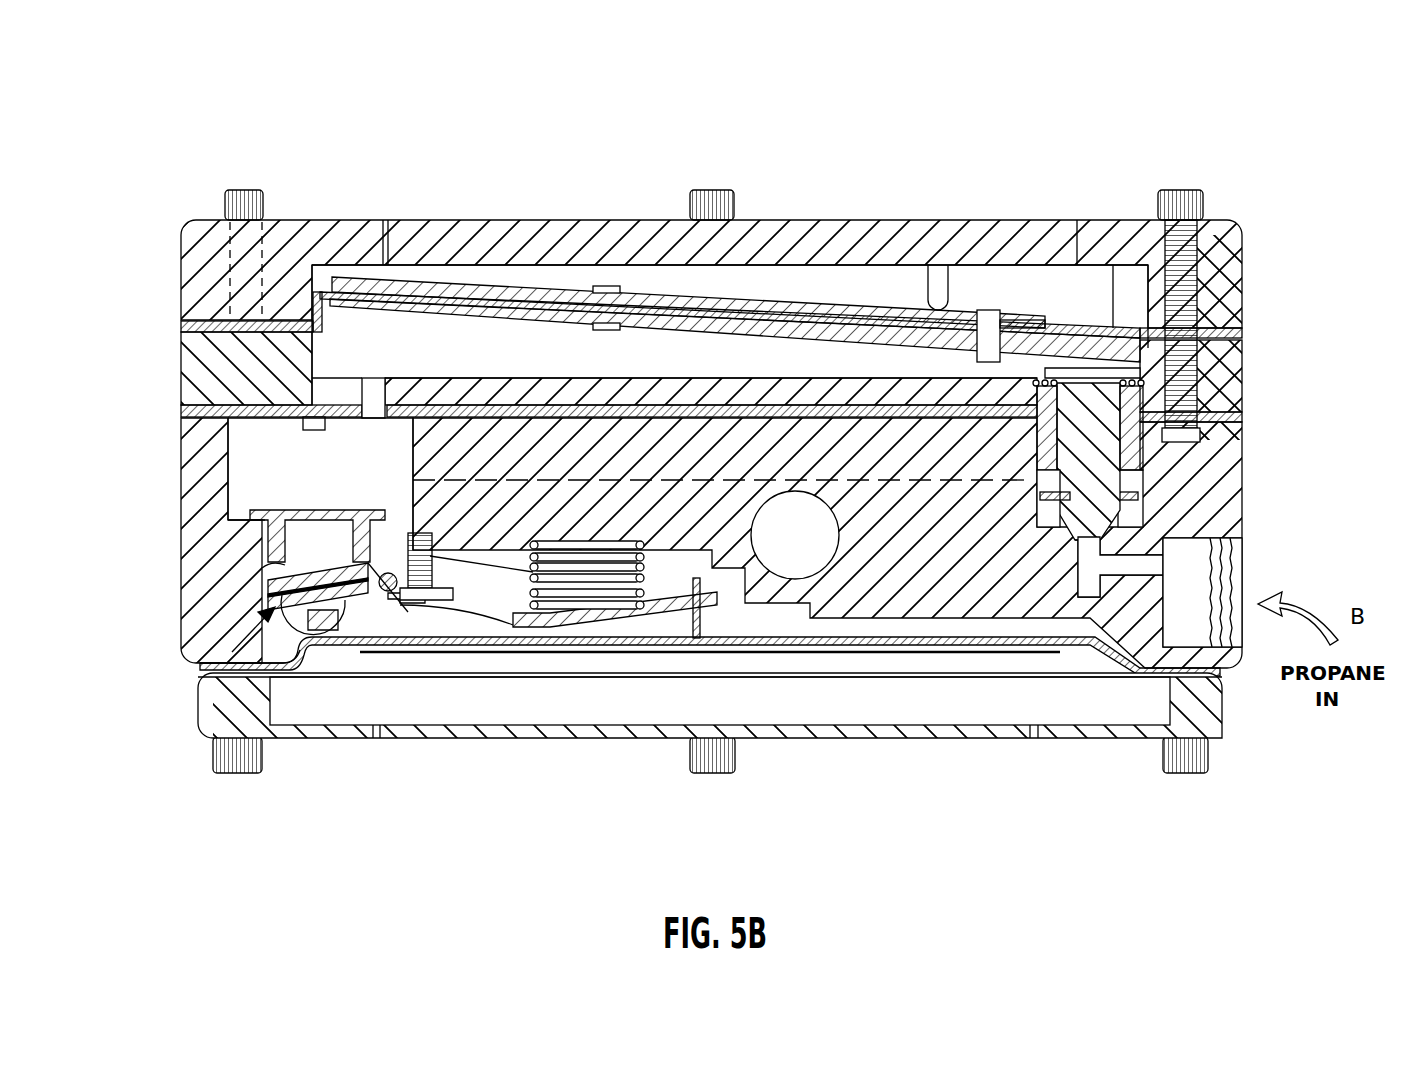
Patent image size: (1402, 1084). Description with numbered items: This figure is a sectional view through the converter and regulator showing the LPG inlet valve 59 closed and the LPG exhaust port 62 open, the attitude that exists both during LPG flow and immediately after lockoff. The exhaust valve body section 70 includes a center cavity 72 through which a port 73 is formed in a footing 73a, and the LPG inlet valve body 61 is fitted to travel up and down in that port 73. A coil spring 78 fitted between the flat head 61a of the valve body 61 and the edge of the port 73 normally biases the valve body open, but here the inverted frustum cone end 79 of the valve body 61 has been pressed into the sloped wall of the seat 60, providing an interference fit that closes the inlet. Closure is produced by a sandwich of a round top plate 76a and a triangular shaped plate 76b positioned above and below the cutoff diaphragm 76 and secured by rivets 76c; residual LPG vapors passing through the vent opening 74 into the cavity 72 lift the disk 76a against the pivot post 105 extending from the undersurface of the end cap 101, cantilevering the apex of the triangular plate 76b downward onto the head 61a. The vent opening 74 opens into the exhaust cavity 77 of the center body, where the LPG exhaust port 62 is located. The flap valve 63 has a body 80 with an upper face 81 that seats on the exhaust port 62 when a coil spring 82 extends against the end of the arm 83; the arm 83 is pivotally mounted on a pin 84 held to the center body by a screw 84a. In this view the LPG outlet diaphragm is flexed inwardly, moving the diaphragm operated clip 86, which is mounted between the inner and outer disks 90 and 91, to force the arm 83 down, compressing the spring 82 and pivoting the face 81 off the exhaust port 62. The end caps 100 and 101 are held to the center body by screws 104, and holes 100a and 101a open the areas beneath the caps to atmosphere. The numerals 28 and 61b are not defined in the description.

The pin 28 is at (1105, 562).
The LPG inlet valve 59 is at (1130, 468).
The seat 60 is at (1235, 598).
The LPG inlet valve body 61 is at (1145, 480).
The flat head 61a is at (1142, 368).
The valve sleeve 61b is at (1135, 495).
The LPG exhaust port 62 is at (265, 566).
The flap valve 63 is at (218, 662).
The exhaust valve body section 70 is at (192, 372).
The center cavity 72 is at (730, 335).
The port 73 is at (1245, 412).
The footing 73a is at (1135, 458).
The vent opening 74 is at (380, 430).
The cutoff diaphragm 76 is at (432, 286).
The round top plate 76a is at (792, 312).
The triangular shaped plate 76b is at (1030, 328).
The rivets 76c is at (605, 286).
The exhaust cavity 77 is at (300, 520).
The coil spring 78 is at (1245, 332).
The end 79 is at (1145, 525).
The body 80 is at (300, 596).
The upper face 81 is at (234, 650).
The coil spring 82 is at (425, 604).
The arm 83 is at (392, 592).
The pin 84 is at (322, 615).
The screw 84a is at (400, 608).
The diaphragm operated clip 86 is at (722, 664).
The inner disk 90 is at (806, 648).
The outer disk 91 is at (697, 642).
The end cap 100 is at (860, 740).
The holes 100a is at (376, 740).
The end cap 101 is at (555, 225).
The holes 101a is at (385, 220).
The screws 104 is at (238, 190).
The pivot post 105 is at (950, 290).